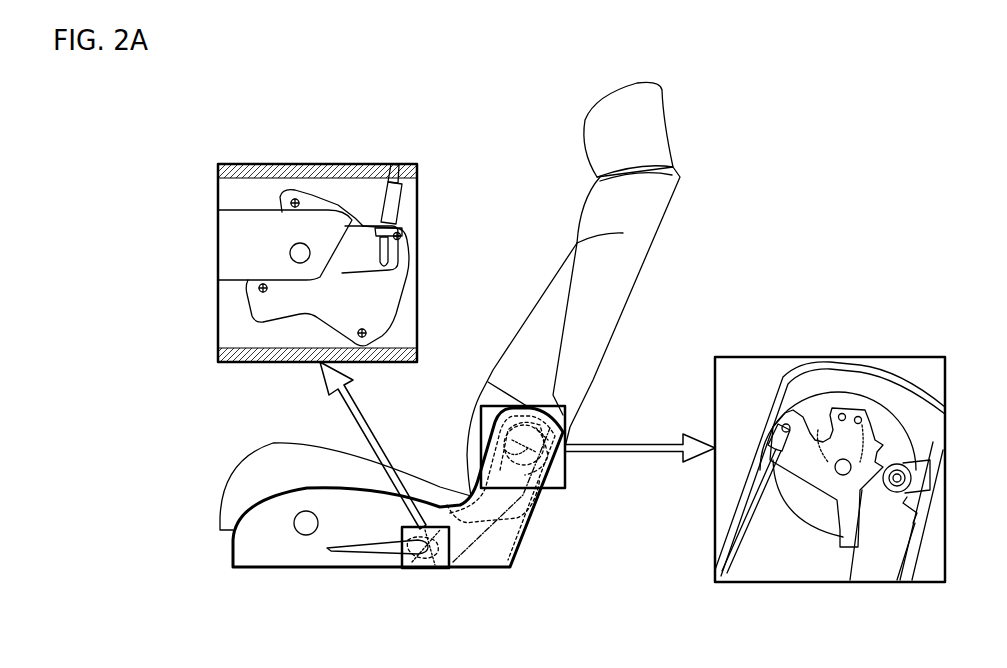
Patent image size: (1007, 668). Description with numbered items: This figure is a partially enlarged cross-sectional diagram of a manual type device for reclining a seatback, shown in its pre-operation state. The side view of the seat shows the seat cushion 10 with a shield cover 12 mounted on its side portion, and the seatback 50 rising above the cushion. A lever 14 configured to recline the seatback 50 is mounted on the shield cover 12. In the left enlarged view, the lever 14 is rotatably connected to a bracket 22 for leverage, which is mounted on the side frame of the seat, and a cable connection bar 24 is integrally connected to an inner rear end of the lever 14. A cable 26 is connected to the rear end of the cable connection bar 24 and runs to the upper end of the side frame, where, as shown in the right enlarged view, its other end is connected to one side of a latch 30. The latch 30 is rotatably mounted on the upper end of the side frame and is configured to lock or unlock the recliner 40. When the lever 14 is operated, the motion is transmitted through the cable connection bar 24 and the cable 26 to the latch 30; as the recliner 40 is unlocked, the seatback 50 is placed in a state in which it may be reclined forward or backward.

The seat cushion 10 is at (230, 467).
The shield cover 12 is at (233, 550).
The lever 14 is at (262, 210).
The bracket 22 is at (402, 290).
The cable connection bar 24 is at (348, 250).
The cable 26 is at (395, 163).
The latch 30 is at (818, 437).
The recliner 40 is at (860, 393).
The seatback 50 is at (568, 277).